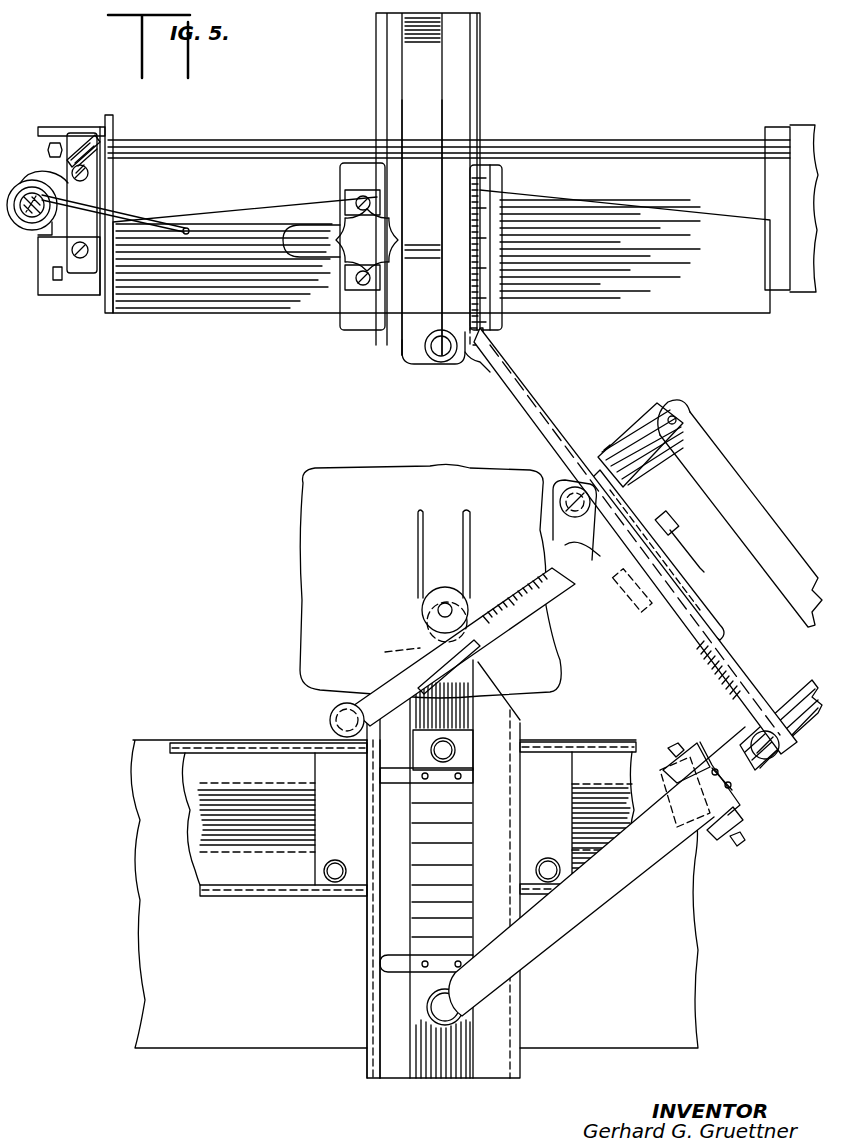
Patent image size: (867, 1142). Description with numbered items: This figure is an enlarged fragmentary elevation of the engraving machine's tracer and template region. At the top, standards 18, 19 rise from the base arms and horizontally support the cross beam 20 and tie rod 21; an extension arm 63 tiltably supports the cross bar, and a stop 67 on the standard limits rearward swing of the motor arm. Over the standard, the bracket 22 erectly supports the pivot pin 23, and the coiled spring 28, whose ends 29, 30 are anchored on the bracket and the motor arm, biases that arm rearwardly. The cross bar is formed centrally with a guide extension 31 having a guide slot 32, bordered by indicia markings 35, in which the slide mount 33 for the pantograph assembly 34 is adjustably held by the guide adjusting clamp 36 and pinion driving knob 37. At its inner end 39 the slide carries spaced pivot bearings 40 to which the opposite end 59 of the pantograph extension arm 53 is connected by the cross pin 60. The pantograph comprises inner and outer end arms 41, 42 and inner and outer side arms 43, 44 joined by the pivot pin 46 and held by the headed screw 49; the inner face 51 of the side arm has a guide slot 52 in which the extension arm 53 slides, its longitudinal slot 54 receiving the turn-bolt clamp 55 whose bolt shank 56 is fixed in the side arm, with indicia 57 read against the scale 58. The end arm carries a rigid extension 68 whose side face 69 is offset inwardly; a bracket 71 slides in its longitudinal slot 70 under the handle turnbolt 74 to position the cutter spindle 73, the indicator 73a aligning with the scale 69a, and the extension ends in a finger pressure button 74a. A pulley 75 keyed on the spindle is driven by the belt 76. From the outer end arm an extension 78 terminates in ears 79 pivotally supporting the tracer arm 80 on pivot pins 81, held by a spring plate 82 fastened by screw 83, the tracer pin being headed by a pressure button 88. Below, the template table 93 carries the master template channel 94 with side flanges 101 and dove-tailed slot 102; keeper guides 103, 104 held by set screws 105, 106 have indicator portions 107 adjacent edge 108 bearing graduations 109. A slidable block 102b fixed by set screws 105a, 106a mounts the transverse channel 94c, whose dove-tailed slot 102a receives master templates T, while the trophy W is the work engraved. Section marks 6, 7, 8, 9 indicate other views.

The standard 18 is at (75, 285).
The standard 19 is at (797, 140).
The cross beam 20 is at (175, 290).
The tie rod 21 is at (643, 146).
The bracket 22 is at (28, 232).
The pivot pin 23 is at (30, 192).
The coiled spring 28 is at (72, 203).
The spring end 29 is at (48, 172).
The spring end 30 is at (165, 228).
The guide extension 31 is at (352, 322).
The guide slot 32 is at (470, 182).
The slide mount 33 is at (465, 75).
The pantograph assembly 34 is at (710, 491).
The indicia markings 35 is at (490, 245).
The guide adjusting clamp 36 is at (310, 237).
The pinion driving knob 37 is at (380, 235).
The inner end of slide mount 39 is at (430, 295).
The pivot bearings 40 is at (420, 355).
The inner end arm 41 is at (638, 442).
The outer end arm 42 is at (780, 705).
The inner side arm 43 is at (690, 625).
The outer side arm 44 is at (762, 515).
The pivot pin 46 is at (675, 416).
The headed screw 49 is at (565, 497).
The inner face 51 is at (716, 625).
The guide slot 52 is at (710, 605).
The pantograph extension arm 53 is at (528, 383).
The longitudinal slot 54 is at (540, 420).
The turn-bolt clamp 55 is at (669, 513).
The bolt shank 56 is at (630, 585).
The indicia 57 is at (585, 555).
The scale 58 is at (710, 652).
The opposite end of extension arm 59 is at (470, 362).
The cross pin 60 is at (438, 342).
The extension arm 63 is at (112, 120).
The stop 67 is at (88, 132).
The extension 68 is at (535, 590).
The side face 69 is at (490, 605).
The scale 69a is at (522, 582).
The longitudinal slot 70 is at (387, 653).
The bracket 71 is at (430, 635).
The cutter spindle 73 is at (438, 610).
The indicator 73a is at (480, 628).
The handle turnbolt 74 is at (478, 650).
The finger pressure button 74a is at (335, 712).
The pulley 75 is at (422, 602).
The belt 76 is at (418, 528).
The extension 78 is at (752, 802).
The ears 79 is at (690, 755).
The tracer arm 80 is at (620, 878).
The pivot pins 81 is at (670, 748).
The spring plate 82 is at (665, 790).
The screw 83 is at (717, 770).
The pressure button 88 is at (442, 1025).
The template table 93 is at (158, 1045).
The master template channel 94 is at (248, 897).
The transverse channel 94c is at (522, 1065).
The side flanges 101 is at (172, 748).
The dove-tailed slot 102 is at (205, 795).
The dove-tailed slot 102a is at (432, 1078).
The slidable block 102b is at (320, 792).
The keeper guide 103 is at (420, 984).
The keeper guide 104 is at (430, 740).
The set screw 105 is at (455, 985).
The set screw 105a is at (324, 871).
The set screw 106 is at (455, 745).
The set screw 106a is at (548, 858).
The indicator portions 107 is at (395, 773).
The edge 108 is at (225, 745).
The graduations 109 is at (242, 752).
The master templates T is at (465, 870).
The trophy W is at (328, 488).
The section line 6 is at (101, 92).
The section line 7 is at (247, 256).
The section line 8 is at (800, 705).
The section line 9 is at (388, 571).